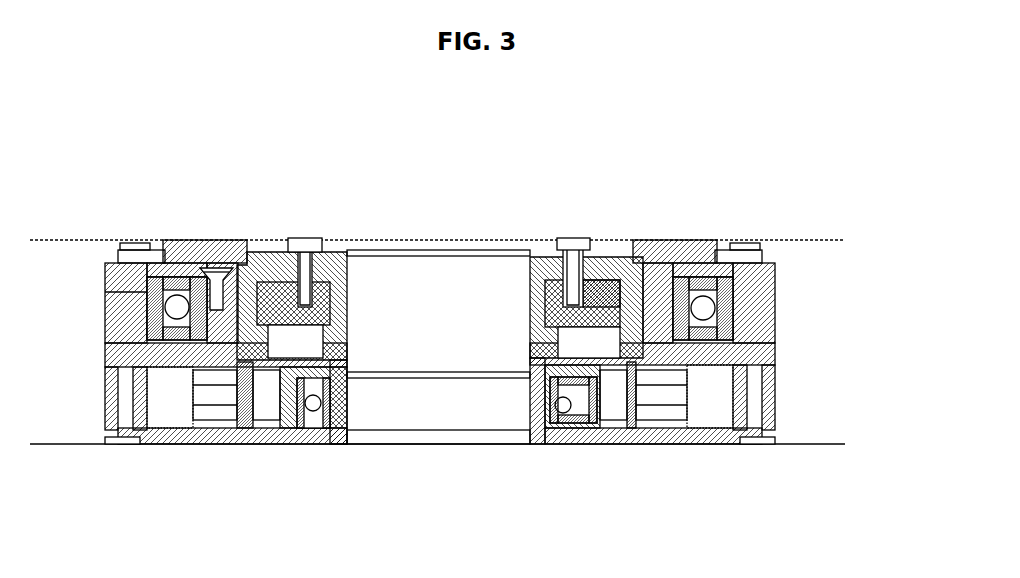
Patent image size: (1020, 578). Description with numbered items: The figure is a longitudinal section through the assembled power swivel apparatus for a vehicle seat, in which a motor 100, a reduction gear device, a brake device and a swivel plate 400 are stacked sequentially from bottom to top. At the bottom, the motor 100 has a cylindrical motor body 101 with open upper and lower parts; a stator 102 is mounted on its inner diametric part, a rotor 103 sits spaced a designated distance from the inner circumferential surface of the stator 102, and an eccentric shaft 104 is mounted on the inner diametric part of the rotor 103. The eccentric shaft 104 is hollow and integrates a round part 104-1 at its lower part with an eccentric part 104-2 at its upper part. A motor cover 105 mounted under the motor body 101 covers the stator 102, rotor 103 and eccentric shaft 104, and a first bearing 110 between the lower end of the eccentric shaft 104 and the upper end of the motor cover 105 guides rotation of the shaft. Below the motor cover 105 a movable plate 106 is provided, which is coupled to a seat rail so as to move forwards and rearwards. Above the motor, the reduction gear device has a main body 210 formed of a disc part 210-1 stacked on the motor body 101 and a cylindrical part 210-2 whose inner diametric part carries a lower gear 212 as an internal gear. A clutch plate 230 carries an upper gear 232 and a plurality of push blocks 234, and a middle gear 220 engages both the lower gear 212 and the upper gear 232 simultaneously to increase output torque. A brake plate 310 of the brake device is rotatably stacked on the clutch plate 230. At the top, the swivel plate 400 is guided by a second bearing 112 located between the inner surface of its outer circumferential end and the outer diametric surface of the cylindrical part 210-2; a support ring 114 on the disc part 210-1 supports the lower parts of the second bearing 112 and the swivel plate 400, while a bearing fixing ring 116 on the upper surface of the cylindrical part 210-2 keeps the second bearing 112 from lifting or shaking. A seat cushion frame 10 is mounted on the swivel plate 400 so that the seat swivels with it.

The seat cushion frame 10 is at (823, 241).
The motor 100 is at (778, 393).
The motor body 101 is at (768, 364).
The stator 102 is at (668, 408).
The rotor 103 is at (618, 422).
The eccentric shaft 104 is at (547, 440).
The round part 104-1 is at (588, 416).
The eccentric part 104-2 is at (541, 350).
The motor cover 105 is at (295, 433).
The movable plate 106 is at (827, 443).
The first bearing 110 is at (313, 410).
The second bearing 112 is at (165, 307).
The support ring 114 is at (112, 297).
The bearing fixing ring 116 is at (197, 270).
The lower gear 212 is at (246, 430).
The middle gear 220 is at (265, 352).
The upper gear 232 is at (251, 336).
The clutch plate 230 is at (602, 303).
The push blocks 234 is at (601, 318).
The brake plate 310 is at (587, 281).
The swivel plate 400 is at (686, 236).
The main body 210 is at (799, 308).
The disc part 210-1 is at (663, 331).
The cylindrical part 210-2 is at (738, 327).